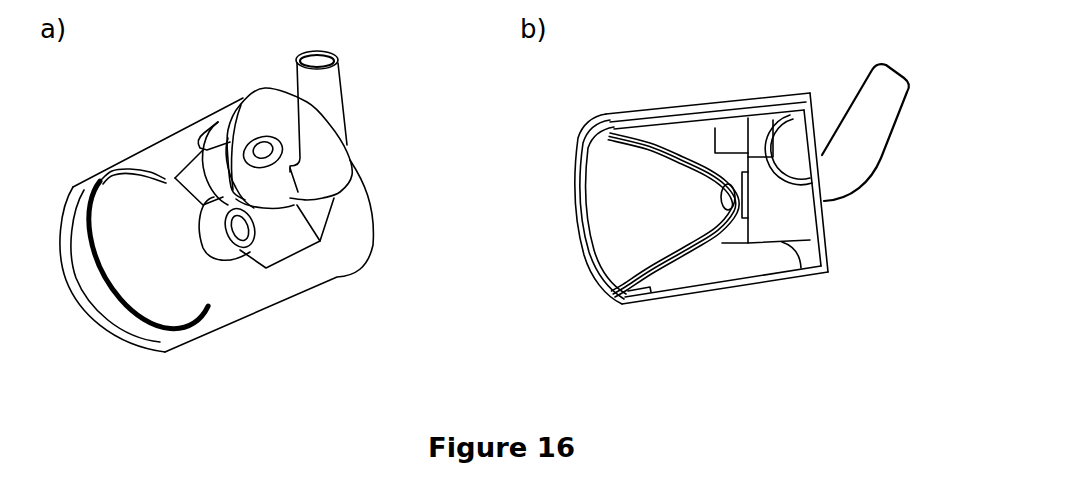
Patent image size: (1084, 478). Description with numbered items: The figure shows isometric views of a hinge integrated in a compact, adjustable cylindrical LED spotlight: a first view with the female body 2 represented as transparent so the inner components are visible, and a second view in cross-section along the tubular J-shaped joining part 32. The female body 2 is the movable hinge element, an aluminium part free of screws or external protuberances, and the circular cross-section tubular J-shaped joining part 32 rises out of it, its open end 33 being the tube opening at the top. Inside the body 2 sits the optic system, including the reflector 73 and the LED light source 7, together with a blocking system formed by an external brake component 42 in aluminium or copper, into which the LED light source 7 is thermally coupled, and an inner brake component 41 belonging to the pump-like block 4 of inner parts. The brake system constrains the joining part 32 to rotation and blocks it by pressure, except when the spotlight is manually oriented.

The female body 2 is at (277, 314).
The pump block 4 is at (762, 173).
The LED light source 7 is at (718, 198).
The circular cross-section tubular J-shaped joining part 32 is at (352, 113).
The tube opening 33 is at (316, 40).
The inner brake component 41 is at (802, 138).
The external brake component 42 is at (788, 213).
The reflector 73 is at (182, 293).